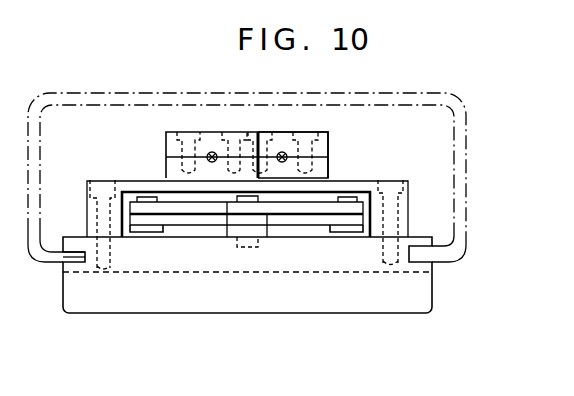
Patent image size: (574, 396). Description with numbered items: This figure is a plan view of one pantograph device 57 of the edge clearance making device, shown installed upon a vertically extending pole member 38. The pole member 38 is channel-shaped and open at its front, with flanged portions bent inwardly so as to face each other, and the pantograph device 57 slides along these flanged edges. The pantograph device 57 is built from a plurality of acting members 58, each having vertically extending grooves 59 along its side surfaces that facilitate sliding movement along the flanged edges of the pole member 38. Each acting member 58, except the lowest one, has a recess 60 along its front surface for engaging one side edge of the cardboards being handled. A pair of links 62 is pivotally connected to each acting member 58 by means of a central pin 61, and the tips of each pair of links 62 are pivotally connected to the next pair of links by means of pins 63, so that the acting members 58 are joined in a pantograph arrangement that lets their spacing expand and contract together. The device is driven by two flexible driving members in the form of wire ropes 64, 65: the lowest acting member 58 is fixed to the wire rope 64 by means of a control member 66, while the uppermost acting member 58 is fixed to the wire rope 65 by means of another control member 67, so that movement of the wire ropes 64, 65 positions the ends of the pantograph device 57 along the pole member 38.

The pole member 38 is at (78, 93).
The pantograph device 57 is at (390, 130).
The acting member 58 is at (212, 308).
The groove 59 is at (85, 257).
The recess 60 is at (327, 272).
The central pin 61 is at (263, 191).
The link 62 is at (308, 208).
The pin 63 is at (143, 197).
The wire rope 64 is at (286, 153).
The wire rope 65 is at (212, 152).
The control member 66 is at (326, 128).
The control member 67 is at (170, 132).